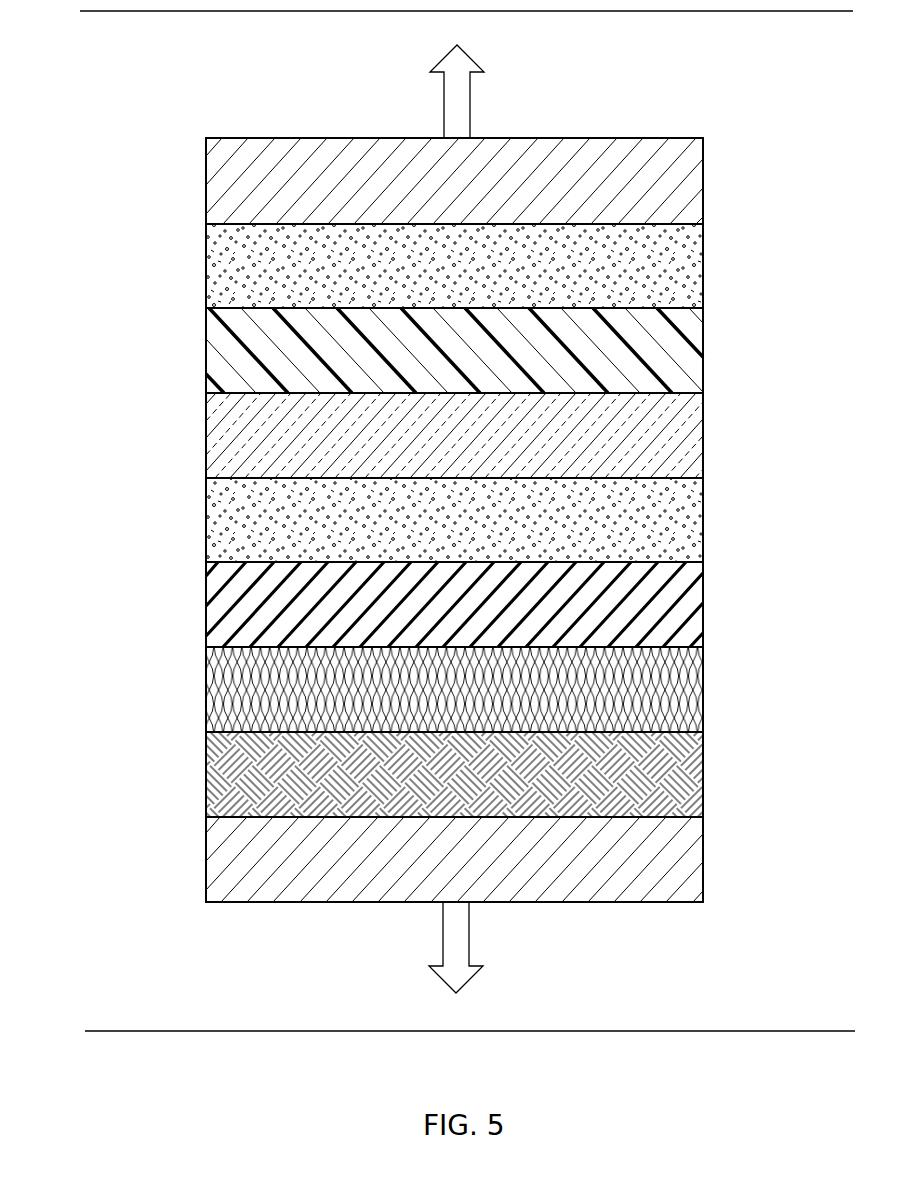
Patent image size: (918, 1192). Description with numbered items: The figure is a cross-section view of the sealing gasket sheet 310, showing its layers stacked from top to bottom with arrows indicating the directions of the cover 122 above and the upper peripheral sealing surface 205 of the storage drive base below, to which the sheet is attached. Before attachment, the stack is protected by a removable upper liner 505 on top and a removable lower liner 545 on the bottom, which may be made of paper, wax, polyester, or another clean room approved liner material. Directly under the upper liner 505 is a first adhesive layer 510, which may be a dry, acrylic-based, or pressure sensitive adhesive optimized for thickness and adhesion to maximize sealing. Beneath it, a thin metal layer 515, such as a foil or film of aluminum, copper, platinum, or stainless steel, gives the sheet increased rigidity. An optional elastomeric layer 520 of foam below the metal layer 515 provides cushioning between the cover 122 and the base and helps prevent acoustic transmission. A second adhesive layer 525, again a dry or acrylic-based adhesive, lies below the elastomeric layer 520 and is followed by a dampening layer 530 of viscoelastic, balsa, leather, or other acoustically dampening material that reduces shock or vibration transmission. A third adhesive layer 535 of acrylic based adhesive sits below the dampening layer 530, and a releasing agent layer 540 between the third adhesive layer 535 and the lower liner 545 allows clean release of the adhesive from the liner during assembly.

The cover 122 is at (152, 11).
The upper peripheral sealing surface 205 is at (147, 1031).
The sealing gasket sheet 310 is at (62, 247).
The upper liner 505 is at (206, 185).
The first adhesive layer 510 is at (206, 272).
The metal layer 515 is at (206, 357).
The elastomeric layer 520 is at (206, 434).
The second adhesive layer 525 is at (206, 524).
The dampening layer 530 is at (206, 610).
The third adhesive layer 535 is at (206, 695).
The releasing agent layer 540 is at (206, 770).
The lower liner 545 is at (206, 855).